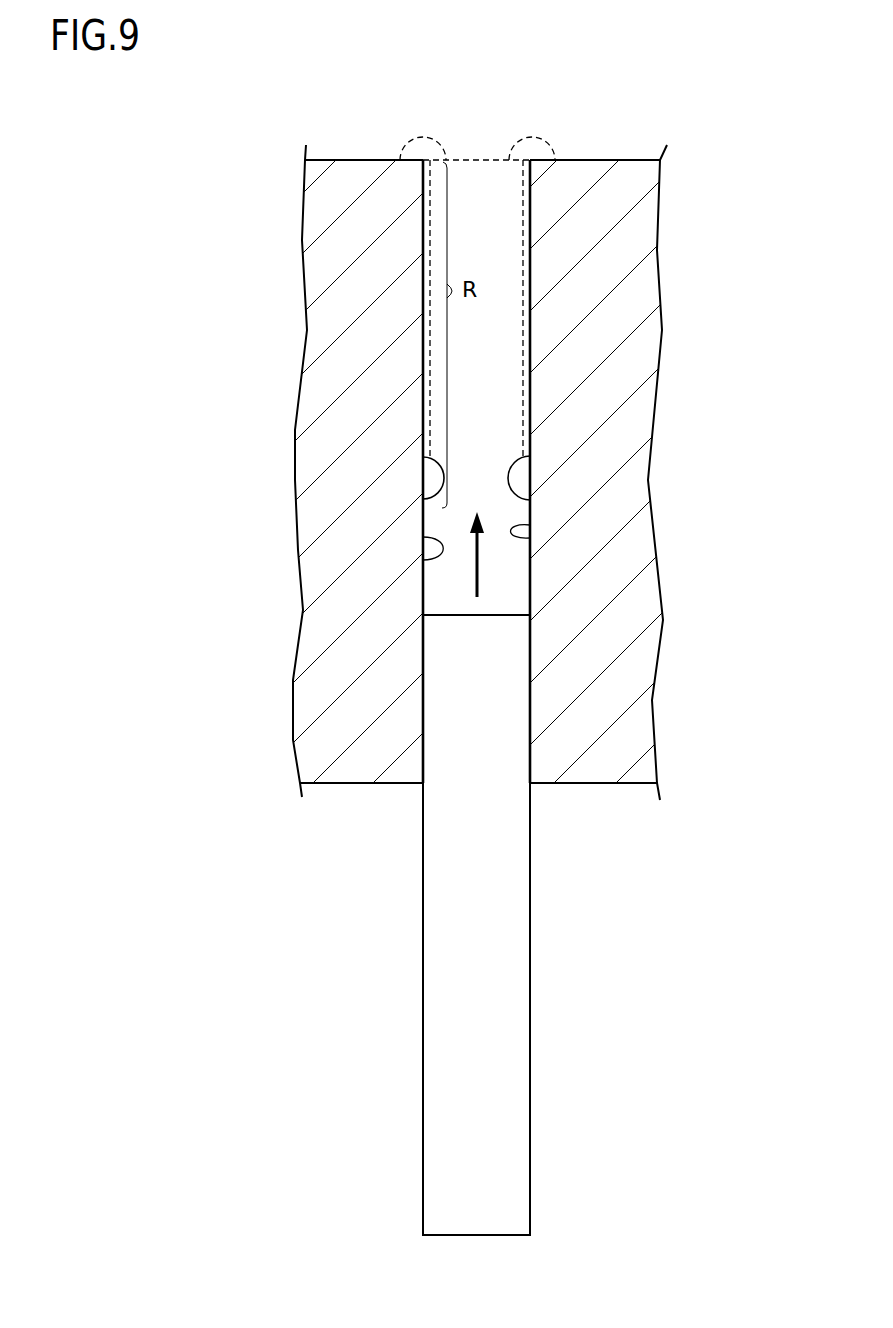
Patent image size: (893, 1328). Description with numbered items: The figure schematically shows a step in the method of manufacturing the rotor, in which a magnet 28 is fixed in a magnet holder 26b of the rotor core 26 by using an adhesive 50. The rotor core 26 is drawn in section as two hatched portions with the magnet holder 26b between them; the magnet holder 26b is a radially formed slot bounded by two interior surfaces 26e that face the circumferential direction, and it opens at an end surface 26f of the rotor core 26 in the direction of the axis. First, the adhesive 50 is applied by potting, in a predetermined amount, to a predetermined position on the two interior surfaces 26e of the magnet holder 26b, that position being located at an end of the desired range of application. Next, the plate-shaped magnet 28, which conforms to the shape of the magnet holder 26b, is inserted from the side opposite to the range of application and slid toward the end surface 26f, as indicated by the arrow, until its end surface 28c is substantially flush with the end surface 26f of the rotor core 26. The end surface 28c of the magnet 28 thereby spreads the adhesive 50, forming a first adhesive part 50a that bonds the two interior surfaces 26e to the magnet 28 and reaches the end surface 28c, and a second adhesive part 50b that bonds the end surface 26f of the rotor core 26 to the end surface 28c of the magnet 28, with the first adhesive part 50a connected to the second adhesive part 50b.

The rotor core 26 is at (604, 130).
The end surface of the rotor core 26f is at (352, 160).
The magnet holder 26b is at (484, 216).
The second adhesive part 50b is at (537, 146).
The first adhesive part 50a is at (428, 321).
The adhesive 50 is at (423, 470).
The interior surfaces of the magnet holder 26e is at (423, 560).
The end surface of the magnet 28c is at (500, 614).
The magnet 28 is at (530, 996).